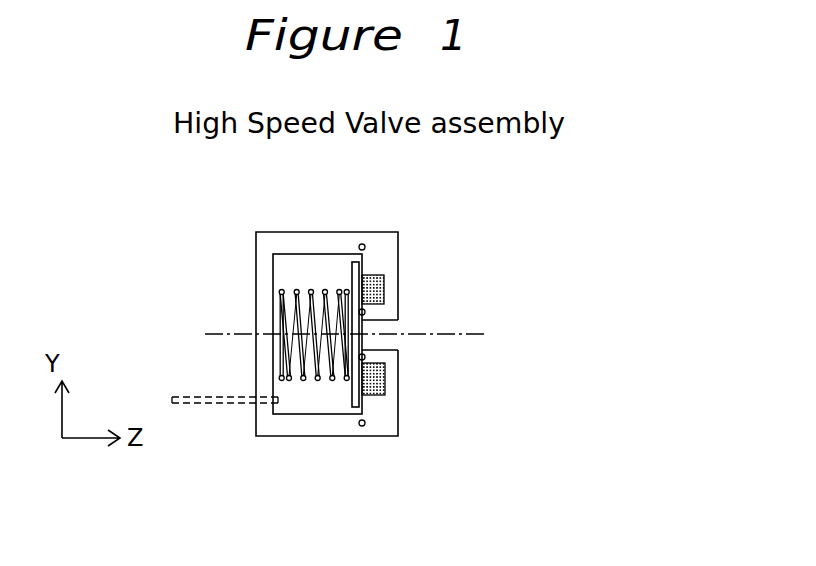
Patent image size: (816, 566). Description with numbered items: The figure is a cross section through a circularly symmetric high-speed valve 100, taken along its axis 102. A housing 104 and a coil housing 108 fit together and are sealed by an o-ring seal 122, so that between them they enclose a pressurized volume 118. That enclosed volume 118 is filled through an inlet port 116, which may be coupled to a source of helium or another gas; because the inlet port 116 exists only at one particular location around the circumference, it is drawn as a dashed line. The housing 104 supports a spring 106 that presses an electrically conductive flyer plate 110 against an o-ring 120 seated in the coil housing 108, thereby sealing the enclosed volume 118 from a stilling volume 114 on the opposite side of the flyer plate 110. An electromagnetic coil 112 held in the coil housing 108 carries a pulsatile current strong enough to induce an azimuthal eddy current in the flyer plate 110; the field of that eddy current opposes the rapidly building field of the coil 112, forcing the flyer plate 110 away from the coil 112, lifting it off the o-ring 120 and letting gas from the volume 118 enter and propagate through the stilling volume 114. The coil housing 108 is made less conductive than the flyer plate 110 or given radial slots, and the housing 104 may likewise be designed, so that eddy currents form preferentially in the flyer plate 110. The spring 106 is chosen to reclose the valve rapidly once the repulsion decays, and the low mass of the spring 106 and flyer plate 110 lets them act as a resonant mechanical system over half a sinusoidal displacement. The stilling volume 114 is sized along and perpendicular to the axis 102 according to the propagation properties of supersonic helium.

The valve 100 is at (258, 199).
The axis 102 is at (218, 331).
The housing 104 is at (257, 437).
The spring 106 is at (280, 289).
The coil housing 108 is at (385, 237).
The flyer plate 110 is at (360, 268).
The electromagnetic coil 112 is at (383, 288).
The stilling volume 114 is at (395, 326).
The inlet port 116 is at (235, 393).
The enclosed volume 118 is at (300, 408).
The o-ring 120 is at (388, 352).
The o-ring seal 122 is at (360, 427).